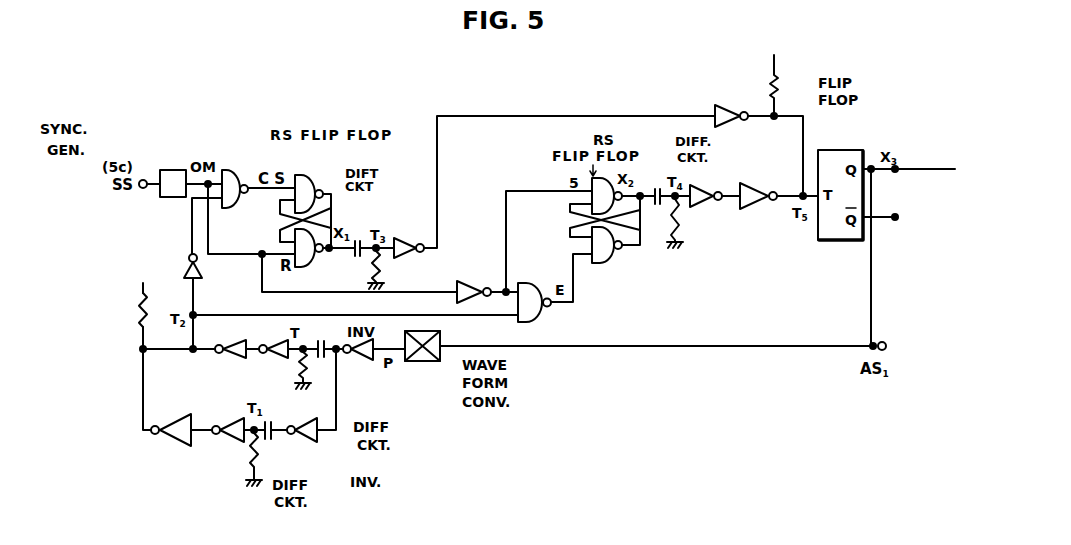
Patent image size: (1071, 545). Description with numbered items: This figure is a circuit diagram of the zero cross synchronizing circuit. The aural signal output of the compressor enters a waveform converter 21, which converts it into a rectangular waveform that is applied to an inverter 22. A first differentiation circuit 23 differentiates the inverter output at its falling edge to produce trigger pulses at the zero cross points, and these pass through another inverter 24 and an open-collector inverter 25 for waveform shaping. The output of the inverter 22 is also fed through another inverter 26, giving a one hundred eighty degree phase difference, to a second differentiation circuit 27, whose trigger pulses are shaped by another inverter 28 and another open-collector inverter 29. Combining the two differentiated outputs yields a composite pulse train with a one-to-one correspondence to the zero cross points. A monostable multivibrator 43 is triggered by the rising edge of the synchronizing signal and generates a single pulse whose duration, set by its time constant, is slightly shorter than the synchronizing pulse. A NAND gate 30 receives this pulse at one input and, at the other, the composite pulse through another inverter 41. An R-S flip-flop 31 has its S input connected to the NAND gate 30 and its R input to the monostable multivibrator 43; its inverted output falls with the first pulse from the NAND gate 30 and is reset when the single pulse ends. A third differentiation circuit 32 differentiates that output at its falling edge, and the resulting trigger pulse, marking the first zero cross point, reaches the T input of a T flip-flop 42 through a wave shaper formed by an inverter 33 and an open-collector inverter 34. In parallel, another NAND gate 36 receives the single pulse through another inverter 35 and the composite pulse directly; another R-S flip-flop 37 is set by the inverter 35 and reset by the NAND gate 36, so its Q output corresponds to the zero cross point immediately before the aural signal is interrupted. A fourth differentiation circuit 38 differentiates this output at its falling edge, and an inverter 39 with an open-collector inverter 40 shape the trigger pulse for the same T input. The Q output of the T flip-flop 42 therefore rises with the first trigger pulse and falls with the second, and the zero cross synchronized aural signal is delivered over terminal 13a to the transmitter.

The waveform converter 21 is at (420, 360).
The inverter 22 is at (360, 360).
The first differentiation circuit 23 is at (320, 356).
The inverter 24 is at (270, 358).
The open-collector inverter 25 is at (230, 358).
The inverter 26 is at (312, 438).
The second differentiation circuit 27 is at (267, 443).
The inverter 28 is at (227, 440).
The open-collector inverter 29 is at (180, 445).
The NAND gate 30 is at (230, 170).
The R-S flip-flop 31 is at (305, 182).
The third differentiation circuit 32 is at (357, 236).
The inverter 33 is at (400, 236).
The open-collector inverter 34 is at (718, 106).
The inverter 35 is at (466, 280).
The NAND gate 36 is at (530, 317).
The R-S flip-flop 37 is at (602, 253).
The fourth differentiation circuit 38 is at (657, 182).
The inverter 39 is at (702, 201).
The open-collector inverter 40 is at (755, 208).
The inverter 41 is at (200, 270).
The T flip-flop 42 is at (842, 152).
The monostable multivibrator 43 is at (174, 178).
The terminal 13a is at (909, 162).